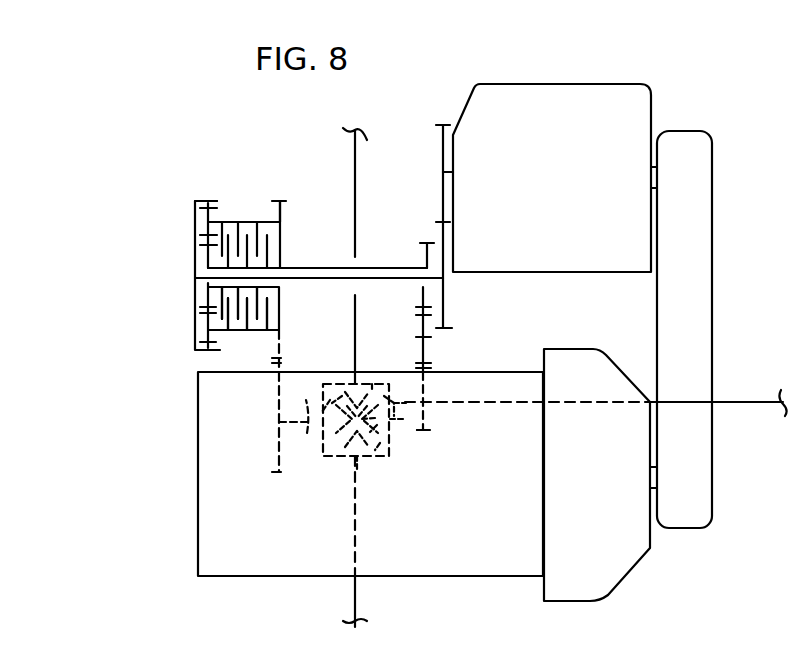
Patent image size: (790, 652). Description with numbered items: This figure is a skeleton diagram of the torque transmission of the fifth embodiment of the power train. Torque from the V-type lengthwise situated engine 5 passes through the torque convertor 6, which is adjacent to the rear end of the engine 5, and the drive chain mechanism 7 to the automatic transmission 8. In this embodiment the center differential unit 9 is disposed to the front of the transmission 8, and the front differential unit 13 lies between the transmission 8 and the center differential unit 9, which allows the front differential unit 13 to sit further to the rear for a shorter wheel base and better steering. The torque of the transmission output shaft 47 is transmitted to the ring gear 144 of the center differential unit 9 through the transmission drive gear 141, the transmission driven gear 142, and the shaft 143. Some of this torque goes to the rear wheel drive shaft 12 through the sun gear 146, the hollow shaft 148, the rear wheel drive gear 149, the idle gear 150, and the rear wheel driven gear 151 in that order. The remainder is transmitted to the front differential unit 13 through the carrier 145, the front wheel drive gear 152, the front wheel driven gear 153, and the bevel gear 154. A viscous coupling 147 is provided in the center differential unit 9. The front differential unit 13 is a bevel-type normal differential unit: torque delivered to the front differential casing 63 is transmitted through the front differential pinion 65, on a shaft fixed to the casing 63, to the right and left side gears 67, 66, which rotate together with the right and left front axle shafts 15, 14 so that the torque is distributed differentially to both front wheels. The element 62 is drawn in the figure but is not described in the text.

The engine 5 is at (198, 578).
The torque convertor 6 is at (620, 582).
The drive chain mechanism 7 is at (714, 296).
The automatic transmission 8 is at (653, 92).
The center differential unit 9 is at (176, 302).
The rear wheel drive shaft 12 is at (743, 405).
The front differential unit 13 is at (325, 478).
The left front axle shaft 14 is at (357, 597).
The right front axle shaft 15 is at (355, 187).
The transmission output shaft 47 is at (455, 130).
The bevel gear 62 is at (418, 432).
The front differential casing 63 is at (380, 443).
The front differential pinion 65 is at (377, 425).
The left side gear 66 is at (365, 442).
The right side gear 67 is at (380, 380).
The transmission drive gear 141 is at (440, 126).
The transmission driven gear 142 is at (450, 330).
The shaft 143 is at (437, 273).
The ring gear 144 is at (200, 200).
The carrier 145 is at (203, 342).
The sun gear 146 is at (210, 302).
The viscous coupling 147 is at (245, 345).
The hollow shaft 148 is at (320, 267).
The rear wheel drive gear 149 is at (422, 242).
The idle gear 150 is at (430, 363).
The rear wheel driven gear 151 is at (407, 403).
The front wheel drive gear 152 is at (278, 201).
The front wheel driven gear 153 is at (277, 475).
The bevel gear 154 is at (307, 433).